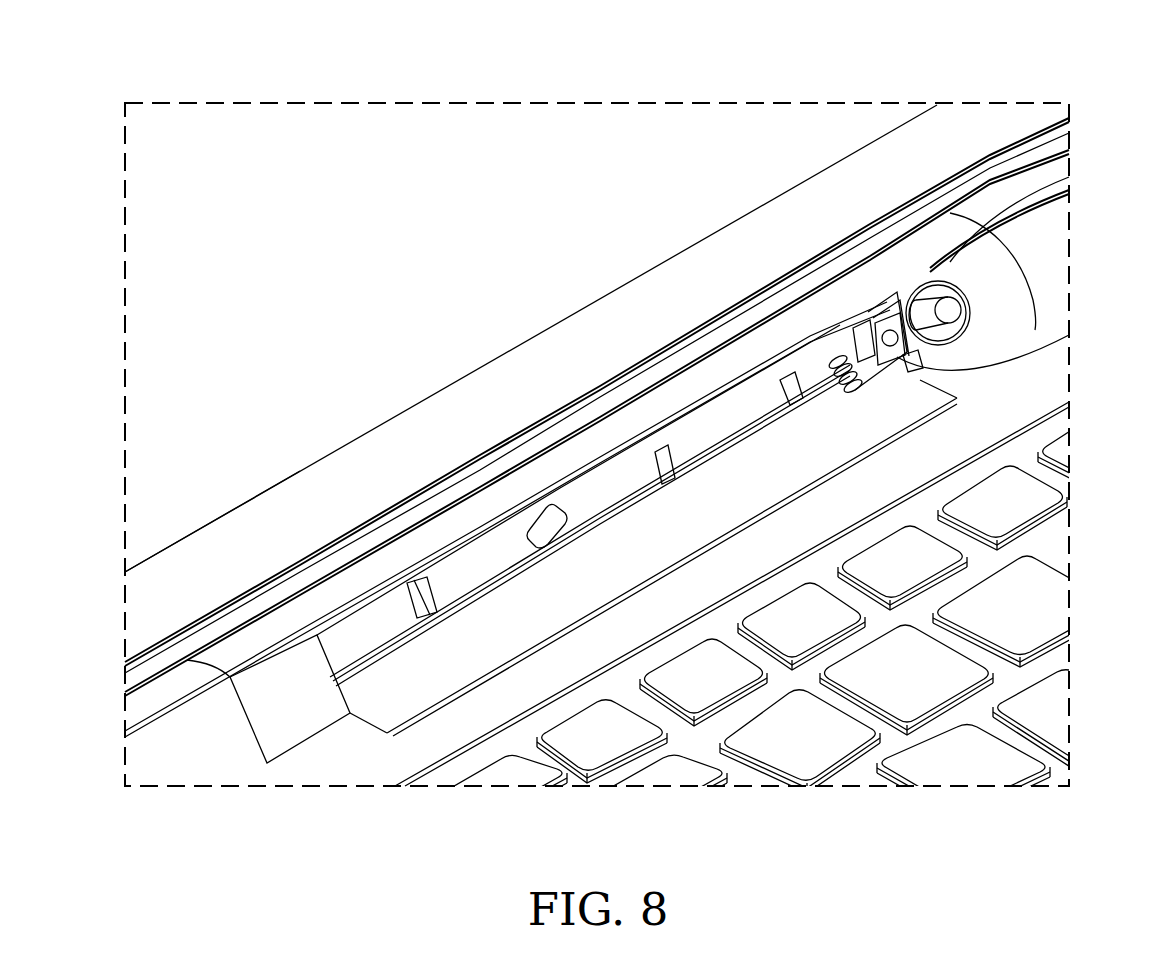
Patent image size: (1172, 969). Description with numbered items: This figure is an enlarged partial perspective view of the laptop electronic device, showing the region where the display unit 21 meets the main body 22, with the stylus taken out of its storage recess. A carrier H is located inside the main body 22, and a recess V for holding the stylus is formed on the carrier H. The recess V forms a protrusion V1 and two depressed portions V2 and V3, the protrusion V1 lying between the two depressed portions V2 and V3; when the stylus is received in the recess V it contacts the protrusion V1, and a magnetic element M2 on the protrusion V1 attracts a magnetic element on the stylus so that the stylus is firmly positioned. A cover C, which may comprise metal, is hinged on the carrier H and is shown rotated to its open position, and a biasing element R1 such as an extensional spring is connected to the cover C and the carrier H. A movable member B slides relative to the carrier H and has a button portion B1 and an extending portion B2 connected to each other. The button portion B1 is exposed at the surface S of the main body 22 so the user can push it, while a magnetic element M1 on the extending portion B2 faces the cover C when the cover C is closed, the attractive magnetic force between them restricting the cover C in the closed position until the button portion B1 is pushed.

The display unit 21 is at (132, 297).
The main body 22 is at (1062, 419).
The recess V is at (732, 45).
The protrusion V1 is at (598, 497).
The depressed portion V2 is at (375, 623).
The depressed portion V3 is at (715, 433).
The biasing element R1 is at (847, 337).
The carrier H is at (873, 340).
The movable member B is at (951, 283).
The button portion B1 is at (948, 312).
The extending portion B2 is at (920, 368).
The magnetic element M1 is at (898, 338).
The magnetic element M2 is at (542, 527).
The cover C is at (690, 520).
The surface S is at (302, 788).